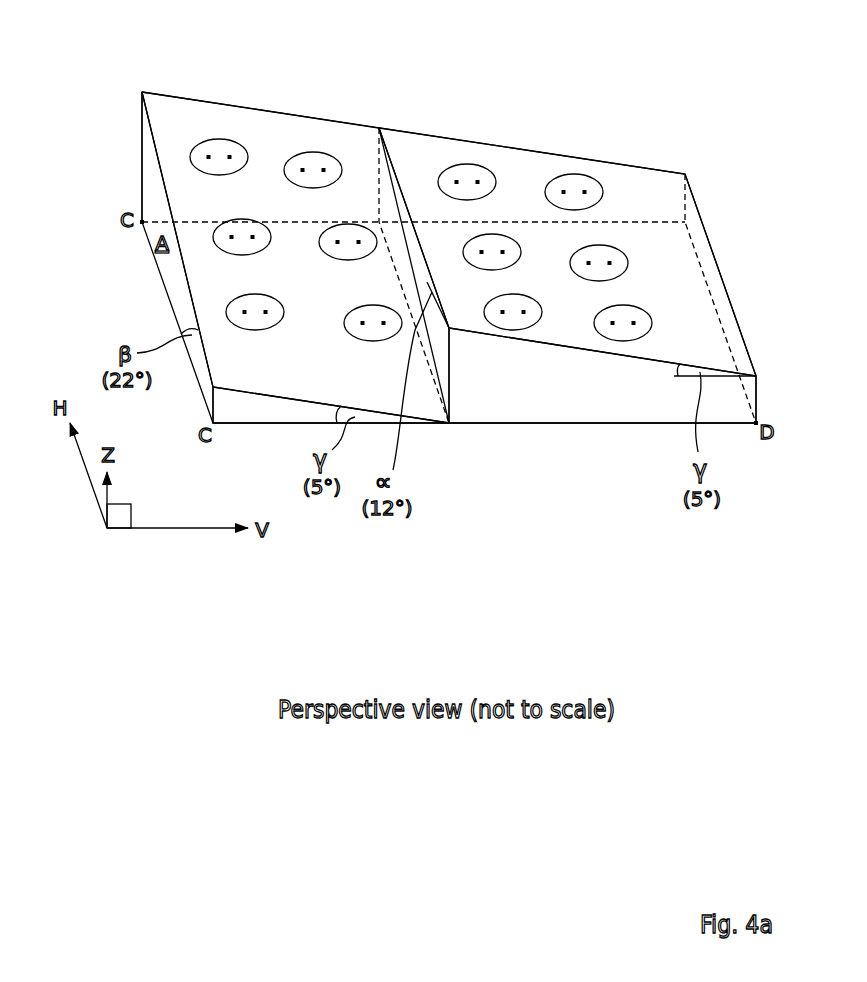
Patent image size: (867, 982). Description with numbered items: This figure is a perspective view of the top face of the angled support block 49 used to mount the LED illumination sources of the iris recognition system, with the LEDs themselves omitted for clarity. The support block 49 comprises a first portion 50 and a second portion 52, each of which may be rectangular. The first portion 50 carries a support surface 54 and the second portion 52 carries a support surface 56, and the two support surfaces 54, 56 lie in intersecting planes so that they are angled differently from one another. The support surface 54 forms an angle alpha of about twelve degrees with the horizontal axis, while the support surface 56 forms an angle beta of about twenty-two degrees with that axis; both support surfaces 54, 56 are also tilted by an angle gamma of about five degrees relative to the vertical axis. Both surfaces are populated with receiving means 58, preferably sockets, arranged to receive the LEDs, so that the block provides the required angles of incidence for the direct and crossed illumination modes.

The angled support block 49 is at (615, 80).
The first portion 50 is at (602, 375).
The second portion 52 is at (331, 405).
The support surface 54 is at (655, 195).
The support surface 56 is at (347, 152).
The receiving means 58 is at (300, 158).